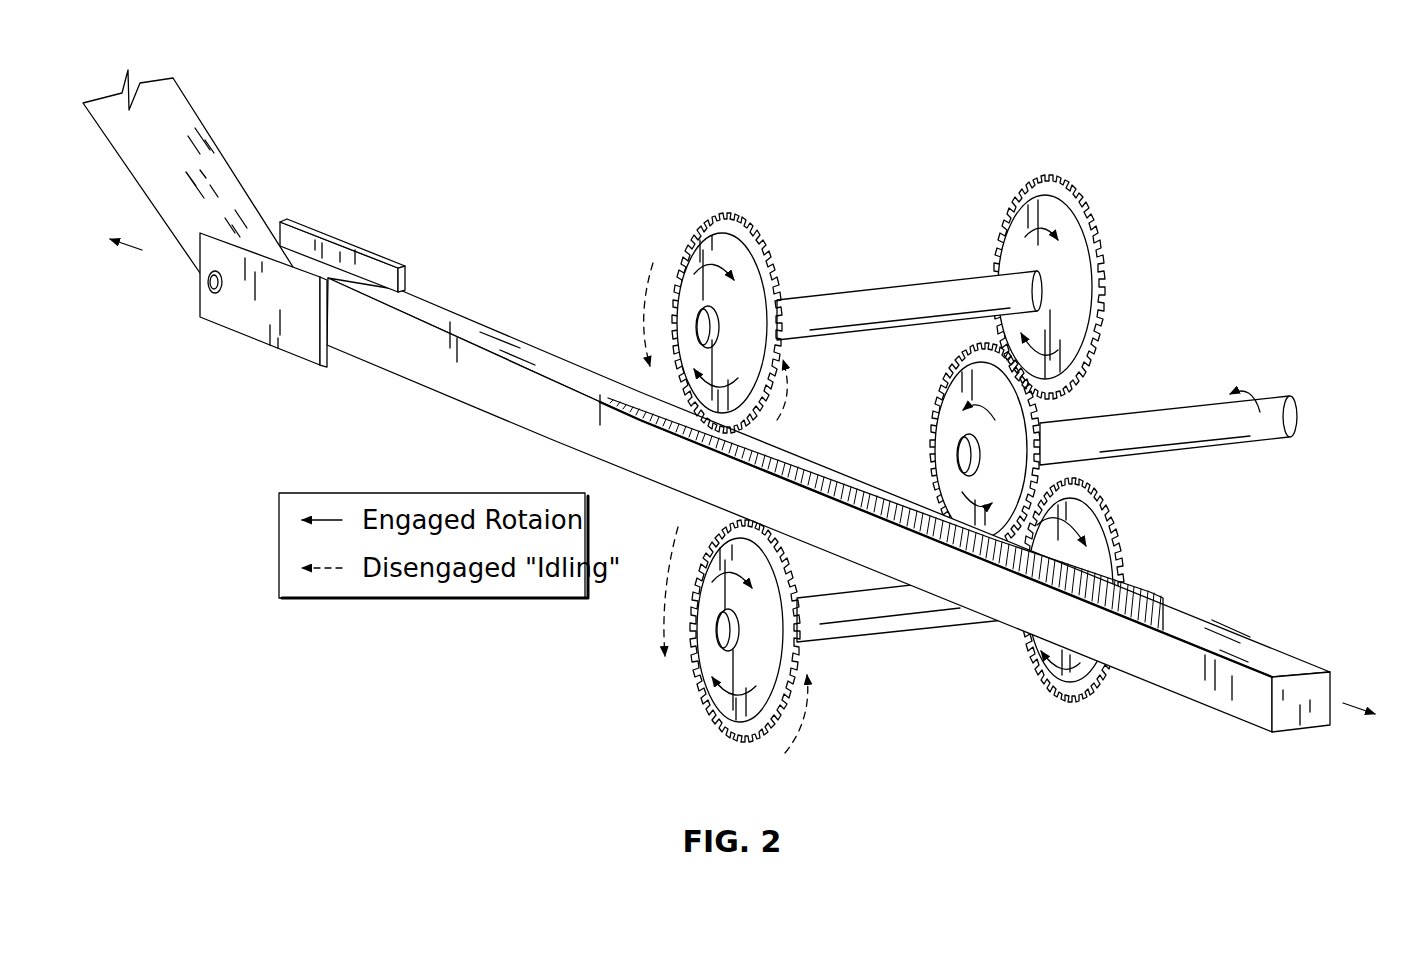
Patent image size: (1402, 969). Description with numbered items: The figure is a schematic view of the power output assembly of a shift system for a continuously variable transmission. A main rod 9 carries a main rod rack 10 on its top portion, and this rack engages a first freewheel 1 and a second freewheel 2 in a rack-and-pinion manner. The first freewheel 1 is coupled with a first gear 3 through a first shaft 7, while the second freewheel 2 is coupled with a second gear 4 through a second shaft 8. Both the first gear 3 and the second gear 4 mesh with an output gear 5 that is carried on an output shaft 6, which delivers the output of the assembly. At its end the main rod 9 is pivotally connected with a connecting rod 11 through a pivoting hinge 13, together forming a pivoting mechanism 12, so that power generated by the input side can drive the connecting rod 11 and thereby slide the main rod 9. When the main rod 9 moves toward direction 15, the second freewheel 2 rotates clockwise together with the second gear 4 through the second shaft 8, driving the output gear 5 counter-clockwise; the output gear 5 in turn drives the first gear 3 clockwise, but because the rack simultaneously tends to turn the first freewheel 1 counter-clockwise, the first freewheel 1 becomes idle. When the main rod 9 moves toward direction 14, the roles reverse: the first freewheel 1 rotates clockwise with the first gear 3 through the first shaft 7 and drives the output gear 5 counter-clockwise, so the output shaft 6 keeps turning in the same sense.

The first freewheel 1 is at (733, 212).
The second freewheel 2 is at (698, 670).
The first gear 3 is at (1050, 173).
The second gear 4 is at (1122, 573).
The output gear 5 is at (1050, 430).
The output shaft 6 is at (1203, 405).
The first shaft 7 is at (863, 287).
The second shaft 8 is at (903, 632).
The main rod 9 is at (1268, 717).
The main rod rack 10 is at (1140, 597).
The connecting rod 11 is at (237, 170).
The pivoting mechanism 12 is at (367, 252).
The pivoting hinge 13 is at (207, 284).
The direction 14 is at (140, 250).
The direction 15 is at (1360, 707).